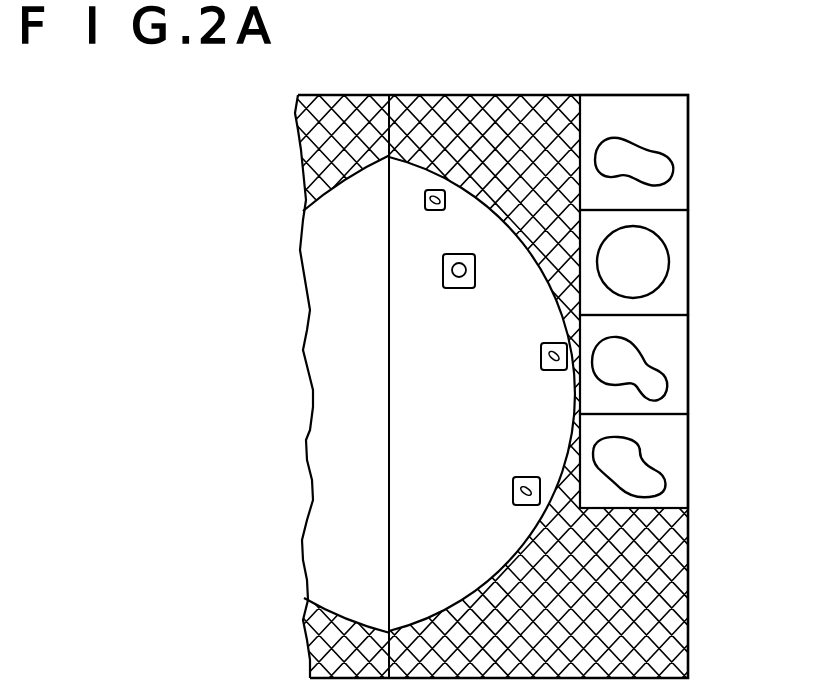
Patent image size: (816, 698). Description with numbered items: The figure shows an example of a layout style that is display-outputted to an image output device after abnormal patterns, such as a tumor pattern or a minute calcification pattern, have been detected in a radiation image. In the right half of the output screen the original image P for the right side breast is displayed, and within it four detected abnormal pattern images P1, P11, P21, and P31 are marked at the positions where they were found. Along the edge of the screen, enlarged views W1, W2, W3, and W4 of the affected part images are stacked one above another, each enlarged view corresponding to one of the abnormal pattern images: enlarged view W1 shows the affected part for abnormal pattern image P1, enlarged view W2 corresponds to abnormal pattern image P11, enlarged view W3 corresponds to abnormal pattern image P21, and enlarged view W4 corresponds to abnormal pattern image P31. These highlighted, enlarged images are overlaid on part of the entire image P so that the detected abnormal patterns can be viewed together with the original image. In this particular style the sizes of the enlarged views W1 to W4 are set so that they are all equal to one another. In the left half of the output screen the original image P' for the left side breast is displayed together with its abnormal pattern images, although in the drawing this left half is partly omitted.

The original image for the left side breast P' is at (346, 341).
The original image for the right side breast P is at (482, 340).
The abnormal pattern image P1 is at (437, 212).
The abnormal pattern image P11 is at (458, 290).
The abnormal pattern image P21 is at (541, 357).
The abnormal pattern image P31 is at (513, 492).
The enlarged view of the affected part image W1 is at (689, 127).
The enlarged view of the affected part image W2 is at (677, 234).
The enlarged view of the affected part image W3 is at (689, 340).
The enlarged view of the affected part image W4 is at (689, 442).